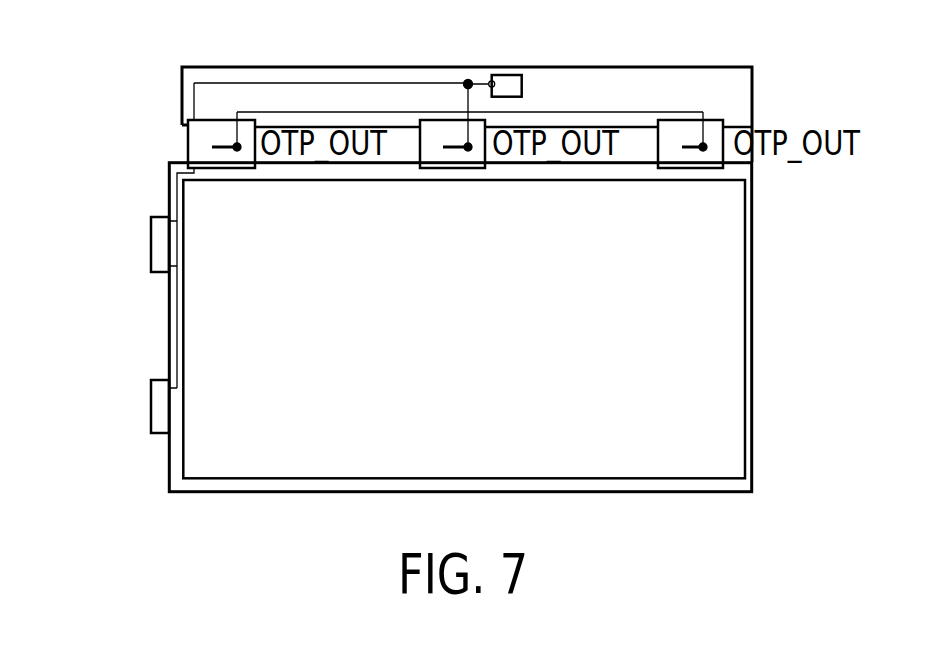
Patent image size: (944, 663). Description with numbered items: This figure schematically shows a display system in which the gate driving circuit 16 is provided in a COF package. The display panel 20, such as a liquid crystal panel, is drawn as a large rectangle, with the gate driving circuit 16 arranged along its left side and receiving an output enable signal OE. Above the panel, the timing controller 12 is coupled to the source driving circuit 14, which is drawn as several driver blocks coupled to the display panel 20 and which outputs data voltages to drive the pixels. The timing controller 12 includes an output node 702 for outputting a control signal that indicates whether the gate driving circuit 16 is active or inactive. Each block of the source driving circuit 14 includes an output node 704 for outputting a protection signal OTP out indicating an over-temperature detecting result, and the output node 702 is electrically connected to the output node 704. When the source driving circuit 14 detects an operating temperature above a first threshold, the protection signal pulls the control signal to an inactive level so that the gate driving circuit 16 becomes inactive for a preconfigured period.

The timing controller 12 is at (510, 75).
The source driving circuit 14 is at (213, 168).
The gate driving circuit 16 is at (151, 243).
The display panel 20 is at (752, 453).
The output node 702 is at (491, 80).
The output node 704 is at (237, 152).